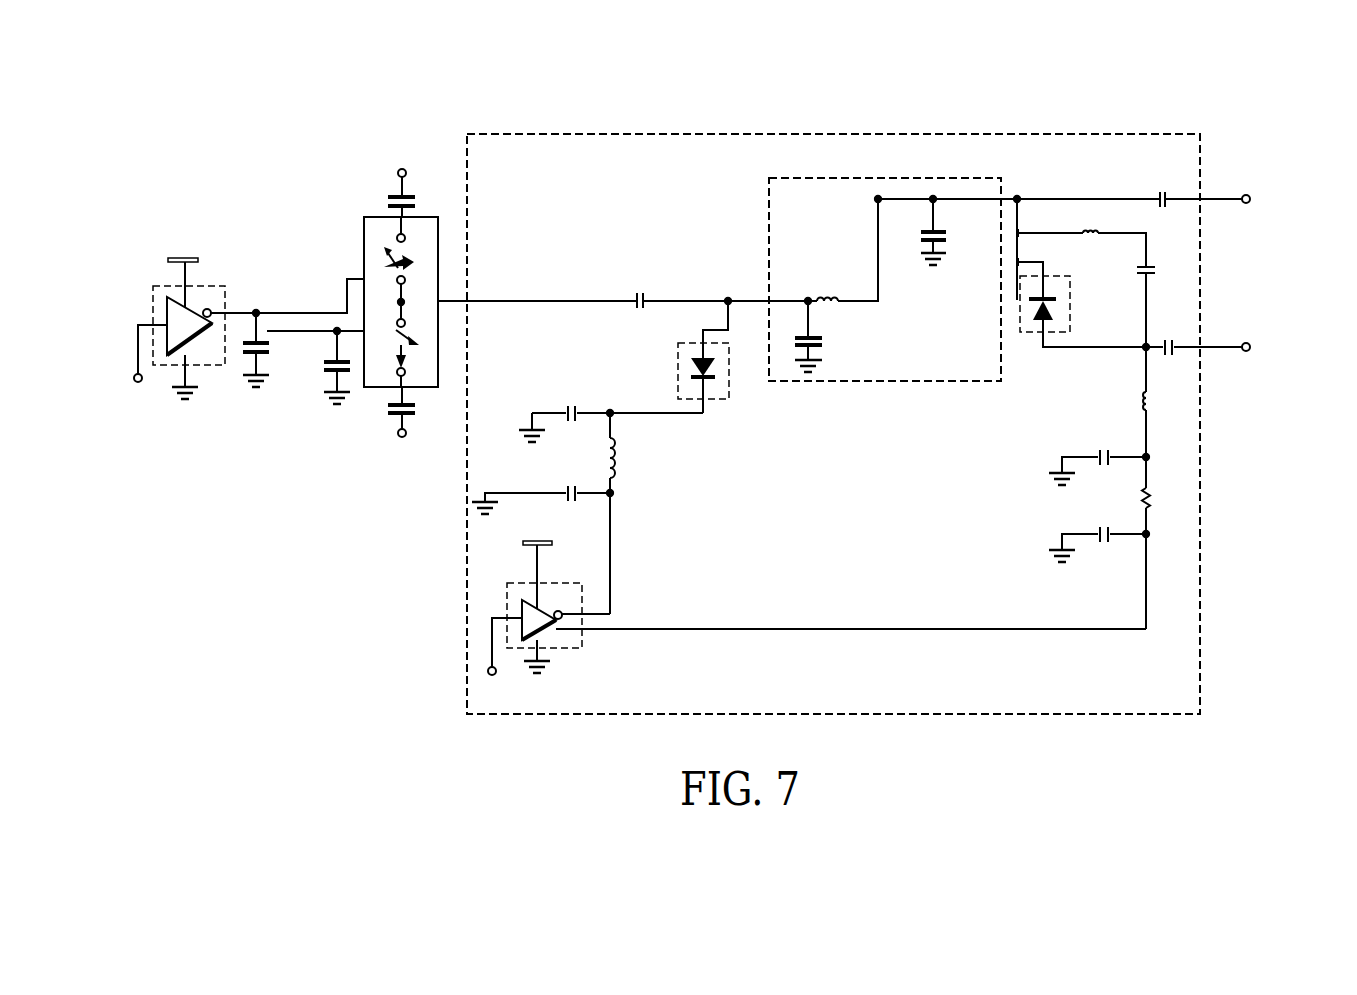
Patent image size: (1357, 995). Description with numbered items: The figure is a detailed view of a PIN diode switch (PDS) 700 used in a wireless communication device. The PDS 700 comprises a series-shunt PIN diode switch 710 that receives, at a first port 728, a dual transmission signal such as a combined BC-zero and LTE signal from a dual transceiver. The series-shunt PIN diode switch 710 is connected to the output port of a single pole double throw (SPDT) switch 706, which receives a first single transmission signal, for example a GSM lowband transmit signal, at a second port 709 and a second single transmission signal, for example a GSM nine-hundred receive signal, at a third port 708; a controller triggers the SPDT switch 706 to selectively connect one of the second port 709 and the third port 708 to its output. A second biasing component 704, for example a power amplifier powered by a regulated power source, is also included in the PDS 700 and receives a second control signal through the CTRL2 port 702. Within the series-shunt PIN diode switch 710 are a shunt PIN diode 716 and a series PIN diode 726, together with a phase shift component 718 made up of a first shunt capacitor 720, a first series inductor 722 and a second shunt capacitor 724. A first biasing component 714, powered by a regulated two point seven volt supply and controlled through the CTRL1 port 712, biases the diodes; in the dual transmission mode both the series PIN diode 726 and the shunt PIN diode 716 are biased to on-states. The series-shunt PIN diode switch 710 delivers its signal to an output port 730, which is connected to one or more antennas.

The PIN diode switch (PDS) 700 is at (1240, 63).
The CTRL2 port 702 is at (138, 383).
The second biasing component 704 is at (210, 286).
The single pole double throw (SPDT) switch 706 is at (364, 240).
The third port 708 is at (402, 168).
The second port 709 is at (400, 438).
The series-shunt PIN diode switch 710 is at (1170, 133).
The CTRL1 port 712 is at (487, 671).
The first biasing component 714 is at (542, 582).
The shunt PIN diode D2 716 is at (722, 400).
The phase shift component 718 is at (971, 177).
The first shunt capacitor 720 is at (823, 343).
The first series inductor 722 is at (830, 293).
The second shunt capacitor 724 is at (933, 268).
The series PIN diode D1 726 is at (1060, 277).
The first port 728 is at (1293, 329).
The output port 730 is at (1293, 177).